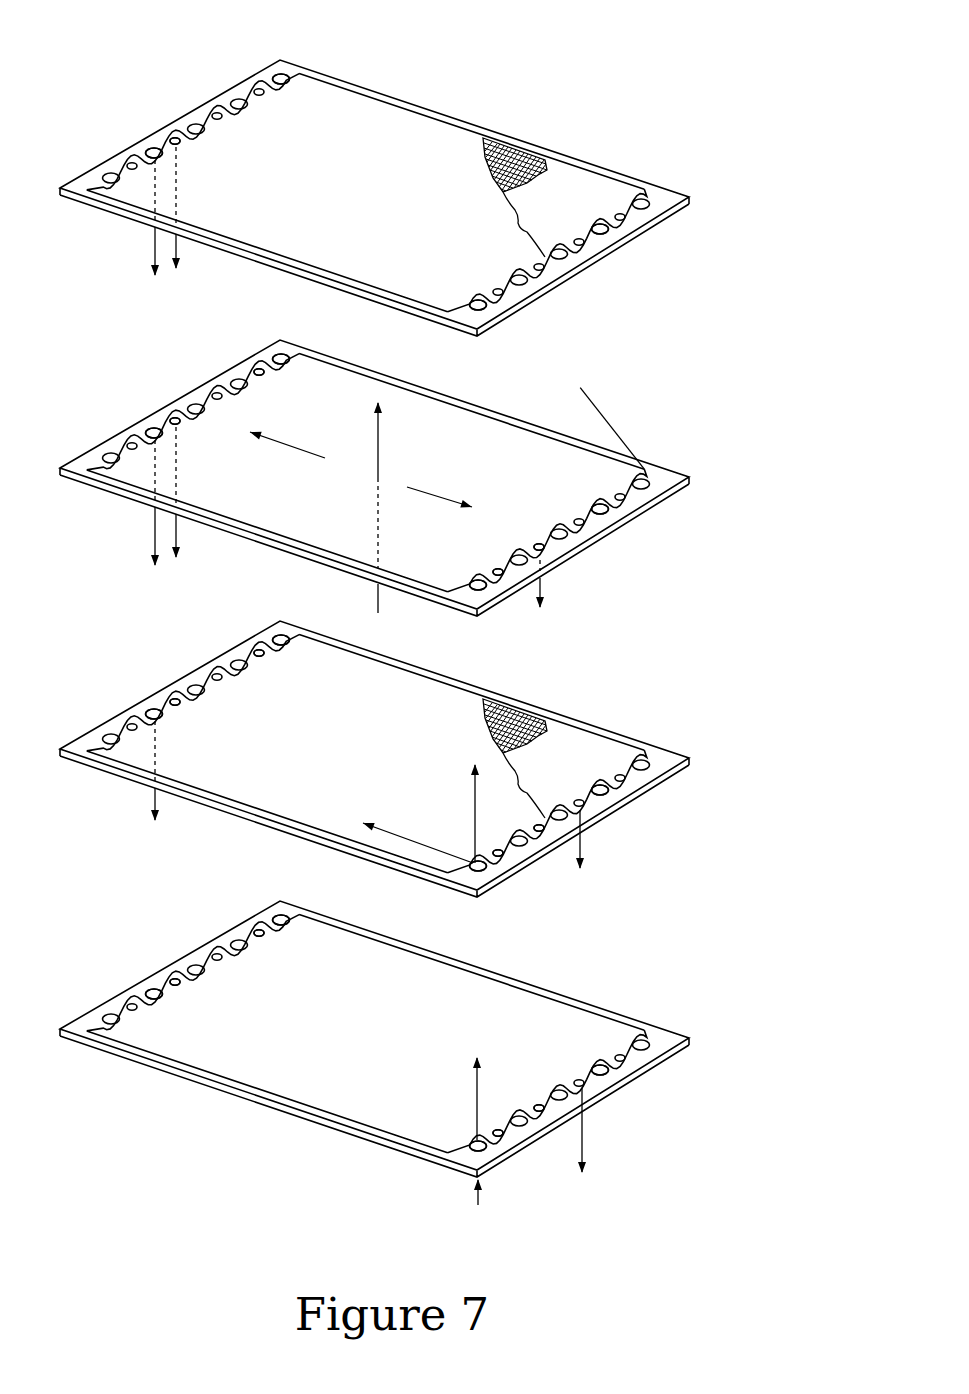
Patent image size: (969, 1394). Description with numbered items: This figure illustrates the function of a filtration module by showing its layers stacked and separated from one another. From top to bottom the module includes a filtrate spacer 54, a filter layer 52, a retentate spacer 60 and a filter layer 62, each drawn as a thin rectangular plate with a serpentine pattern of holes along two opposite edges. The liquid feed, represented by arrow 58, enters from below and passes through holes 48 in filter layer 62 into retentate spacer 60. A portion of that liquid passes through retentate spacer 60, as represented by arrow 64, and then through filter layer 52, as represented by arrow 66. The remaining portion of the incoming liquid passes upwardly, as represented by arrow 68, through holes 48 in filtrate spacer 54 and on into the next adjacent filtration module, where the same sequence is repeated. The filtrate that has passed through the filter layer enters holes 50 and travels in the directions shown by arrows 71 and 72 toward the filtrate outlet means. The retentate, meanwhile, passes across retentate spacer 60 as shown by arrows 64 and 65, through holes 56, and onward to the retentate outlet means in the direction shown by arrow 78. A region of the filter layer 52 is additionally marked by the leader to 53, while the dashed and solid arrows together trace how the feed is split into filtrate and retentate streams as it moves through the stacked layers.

The holes 48 is at (604, 232).
The holes 50 is at (174, 139).
The filter layer 52 is at (374, 478).
The plate frame region 53 is at (578, 466).
The filtrate spacer 54 is at (374, 198).
The holes 56 is at (152, 150).
The arrow 58 is at (480, 1207).
The retentate spacer 60 is at (374, 759).
The filter layer 62 is at (374, 1039).
The arrow 64 is at (423, 840).
The arrow 65 is at (158, 758).
The arrow 66 is at (376, 456).
The arrow 68 is at (470, 822).
The arrow 71 is at (178, 246).
The arrow 72 is at (542, 583).
The arrow 78 is at (153, 234).